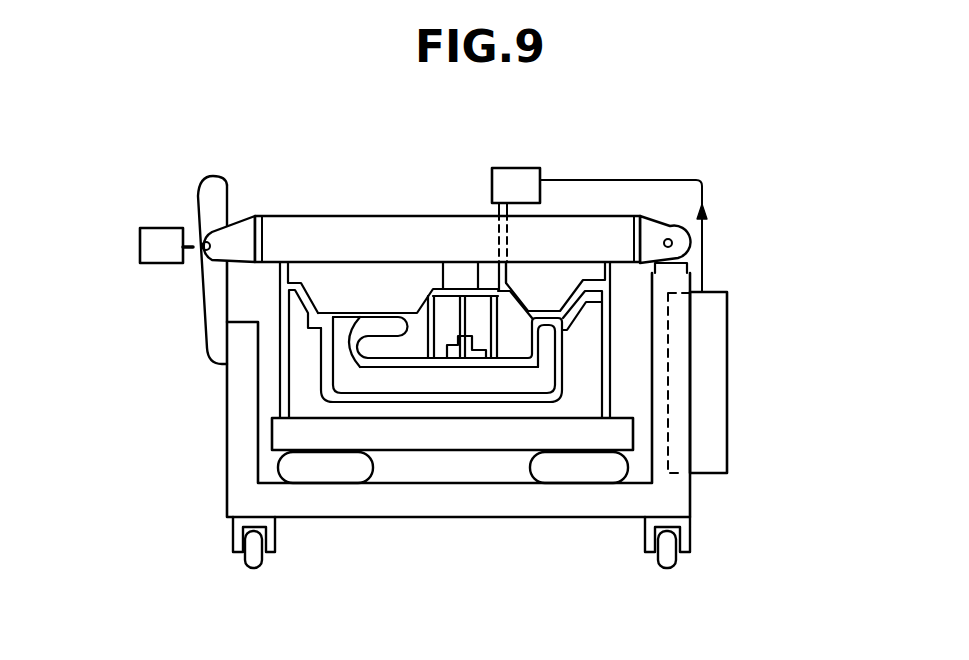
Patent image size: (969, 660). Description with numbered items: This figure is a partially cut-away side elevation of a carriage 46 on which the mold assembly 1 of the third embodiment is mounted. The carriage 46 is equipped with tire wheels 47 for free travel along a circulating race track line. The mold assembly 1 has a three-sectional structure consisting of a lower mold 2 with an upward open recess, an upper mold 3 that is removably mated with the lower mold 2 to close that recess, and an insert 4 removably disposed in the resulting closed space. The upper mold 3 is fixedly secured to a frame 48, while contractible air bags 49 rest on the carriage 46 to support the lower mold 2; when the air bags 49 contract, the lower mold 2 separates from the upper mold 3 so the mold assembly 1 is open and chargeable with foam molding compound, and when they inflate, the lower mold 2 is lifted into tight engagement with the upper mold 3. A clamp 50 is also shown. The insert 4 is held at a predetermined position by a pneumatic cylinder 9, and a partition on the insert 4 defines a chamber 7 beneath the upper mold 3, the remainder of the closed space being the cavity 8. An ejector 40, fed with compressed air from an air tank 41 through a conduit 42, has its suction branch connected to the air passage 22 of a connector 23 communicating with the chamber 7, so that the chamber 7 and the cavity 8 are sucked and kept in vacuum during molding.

The mold assembly 1 is at (383, 313).
The lower mold 2 is at (393, 403).
The upper mold 3 is at (347, 307).
The insert 4 is at (523, 360).
The chamber 7 is at (522, 336).
The cavity 8 is at (483, 385).
The pneumatic cylinder 9 is at (460, 313).
The air passage 22 is at (505, 280).
The connector 23 is at (497, 243).
The ejector 40 is at (515, 168).
The air tank 41 is at (705, 308).
The conduit 42 is at (678, 179).
The carriage 46 is at (242, 397).
The tire wheels 47 is at (253, 570).
The frame 48 is at (432, 228).
The contractible air bags 49 is at (602, 470).
The clamp 50 is at (210, 292).